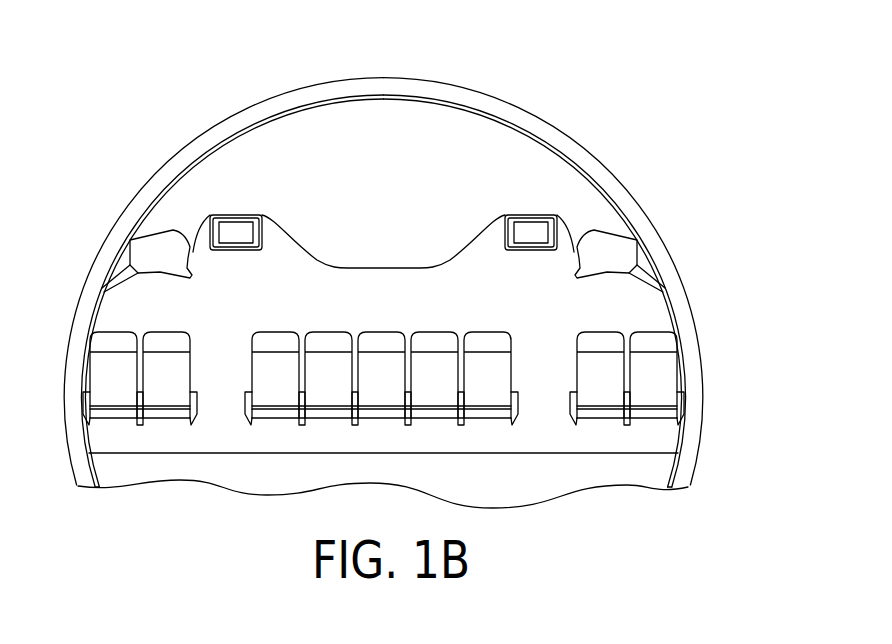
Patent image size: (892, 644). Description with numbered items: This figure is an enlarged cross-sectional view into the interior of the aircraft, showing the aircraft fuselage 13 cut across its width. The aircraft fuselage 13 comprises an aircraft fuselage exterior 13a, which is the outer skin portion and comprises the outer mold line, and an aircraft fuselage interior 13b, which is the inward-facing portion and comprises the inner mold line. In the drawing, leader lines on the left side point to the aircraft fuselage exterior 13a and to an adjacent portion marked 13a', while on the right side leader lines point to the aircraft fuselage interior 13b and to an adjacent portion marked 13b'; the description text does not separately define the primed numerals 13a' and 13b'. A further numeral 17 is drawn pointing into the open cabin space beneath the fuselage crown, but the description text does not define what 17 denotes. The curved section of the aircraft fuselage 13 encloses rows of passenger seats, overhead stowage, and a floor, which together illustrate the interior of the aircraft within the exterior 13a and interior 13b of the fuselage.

The aircraft fuselage 13 is at (415, 261).
The aircraft fuselage exterior 13a is at (223, 281).
The first inner lining portion 13a' is at (232, 263).
The aircraft fuselage interior 13b is at (543, 257).
The second inner lining portion 13b' is at (535, 291).
The passenger cabin 17 is at (320, 127).